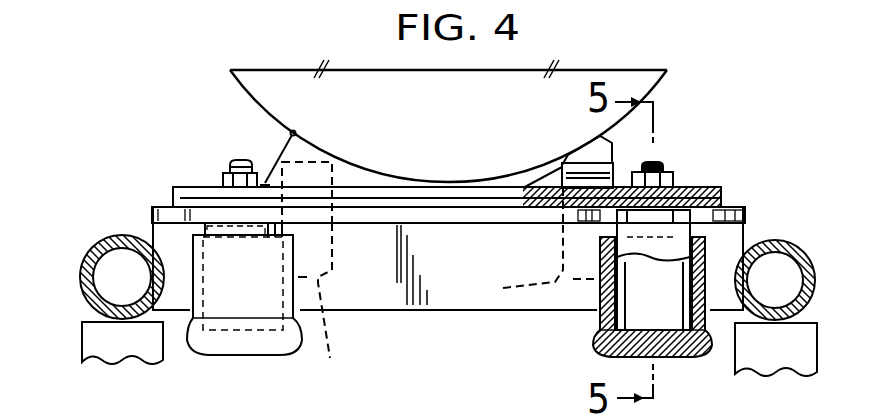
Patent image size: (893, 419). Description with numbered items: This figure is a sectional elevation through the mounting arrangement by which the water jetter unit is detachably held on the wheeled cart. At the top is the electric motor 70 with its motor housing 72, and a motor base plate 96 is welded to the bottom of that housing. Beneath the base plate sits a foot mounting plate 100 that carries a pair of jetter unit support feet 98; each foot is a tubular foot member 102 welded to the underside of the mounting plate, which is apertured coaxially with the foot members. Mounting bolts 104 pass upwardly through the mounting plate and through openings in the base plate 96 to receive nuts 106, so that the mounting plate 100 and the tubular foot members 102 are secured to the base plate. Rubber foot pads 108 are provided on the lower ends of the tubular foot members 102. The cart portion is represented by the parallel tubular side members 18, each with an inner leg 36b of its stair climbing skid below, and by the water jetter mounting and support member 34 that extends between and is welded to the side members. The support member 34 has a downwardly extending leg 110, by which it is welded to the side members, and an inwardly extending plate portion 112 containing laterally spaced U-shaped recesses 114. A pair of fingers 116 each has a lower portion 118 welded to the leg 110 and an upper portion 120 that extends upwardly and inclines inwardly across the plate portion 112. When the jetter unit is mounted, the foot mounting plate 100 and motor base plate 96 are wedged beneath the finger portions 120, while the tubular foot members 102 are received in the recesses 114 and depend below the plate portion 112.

The tubular side members 18 is at (82, 259).
The water jetter mounting and support member 34 is at (447, 312).
The inner leg 36b is at (93, 348).
The electric motor 70 is at (449, 122).
The motor housing 72 is at (653, 87).
The motor base plate 96 is at (195, 190).
The jetter unit support feet 98 is at (232, 357).
The foot mounting plate 100 is at (700, 187).
The tubular foot member 102 is at (283, 228).
The mounting bolts 104 is at (240, 160).
The nuts 106 is at (233, 173).
The rubber foot pads 108 is at (285, 352).
The downwardly extending leg 110 is at (383, 298).
The inwardly extending plate portion 112 is at (433, 218).
The U-shaped recesses 114 is at (152, 215).
The fingers 116 is at (597, 153).
The lower portion 118 is at (447, 306).
The upper portion 120 is at (310, 162).